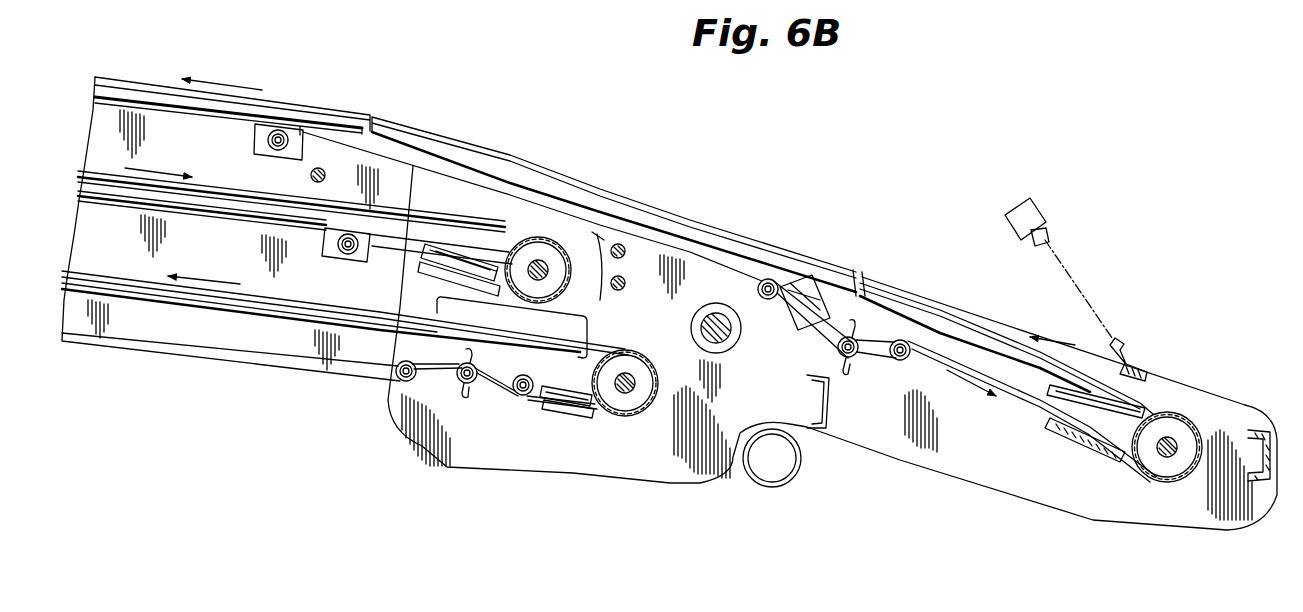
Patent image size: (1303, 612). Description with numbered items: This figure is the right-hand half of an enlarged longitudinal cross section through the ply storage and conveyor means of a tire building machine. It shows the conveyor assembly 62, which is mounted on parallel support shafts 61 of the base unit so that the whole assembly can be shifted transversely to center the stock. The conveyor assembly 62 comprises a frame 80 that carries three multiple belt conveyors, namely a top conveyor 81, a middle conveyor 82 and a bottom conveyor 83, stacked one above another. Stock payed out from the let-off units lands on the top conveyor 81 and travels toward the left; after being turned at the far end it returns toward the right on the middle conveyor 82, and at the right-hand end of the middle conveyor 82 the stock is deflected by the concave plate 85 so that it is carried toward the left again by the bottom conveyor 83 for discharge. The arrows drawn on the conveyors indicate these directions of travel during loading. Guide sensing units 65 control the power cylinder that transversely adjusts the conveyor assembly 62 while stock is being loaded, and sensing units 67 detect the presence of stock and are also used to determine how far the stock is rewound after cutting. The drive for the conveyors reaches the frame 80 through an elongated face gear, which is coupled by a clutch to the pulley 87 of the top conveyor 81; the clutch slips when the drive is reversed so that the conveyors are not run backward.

The support shafts 61 is at (732, 329).
The conveyor assembly 62 is at (422, 122).
The guide sensing units 65 is at (1046, 228).
The sensing units 67 is at (1036, 244).
The frame 80 is at (580, 478).
The top conveyor 81 is at (287, 103).
The middle conveyor 82 is at (217, 187).
The bottom conveyor 83 is at (320, 300).
The concave plate 85 is at (622, 282).
The pulley 87 is at (1170, 415).